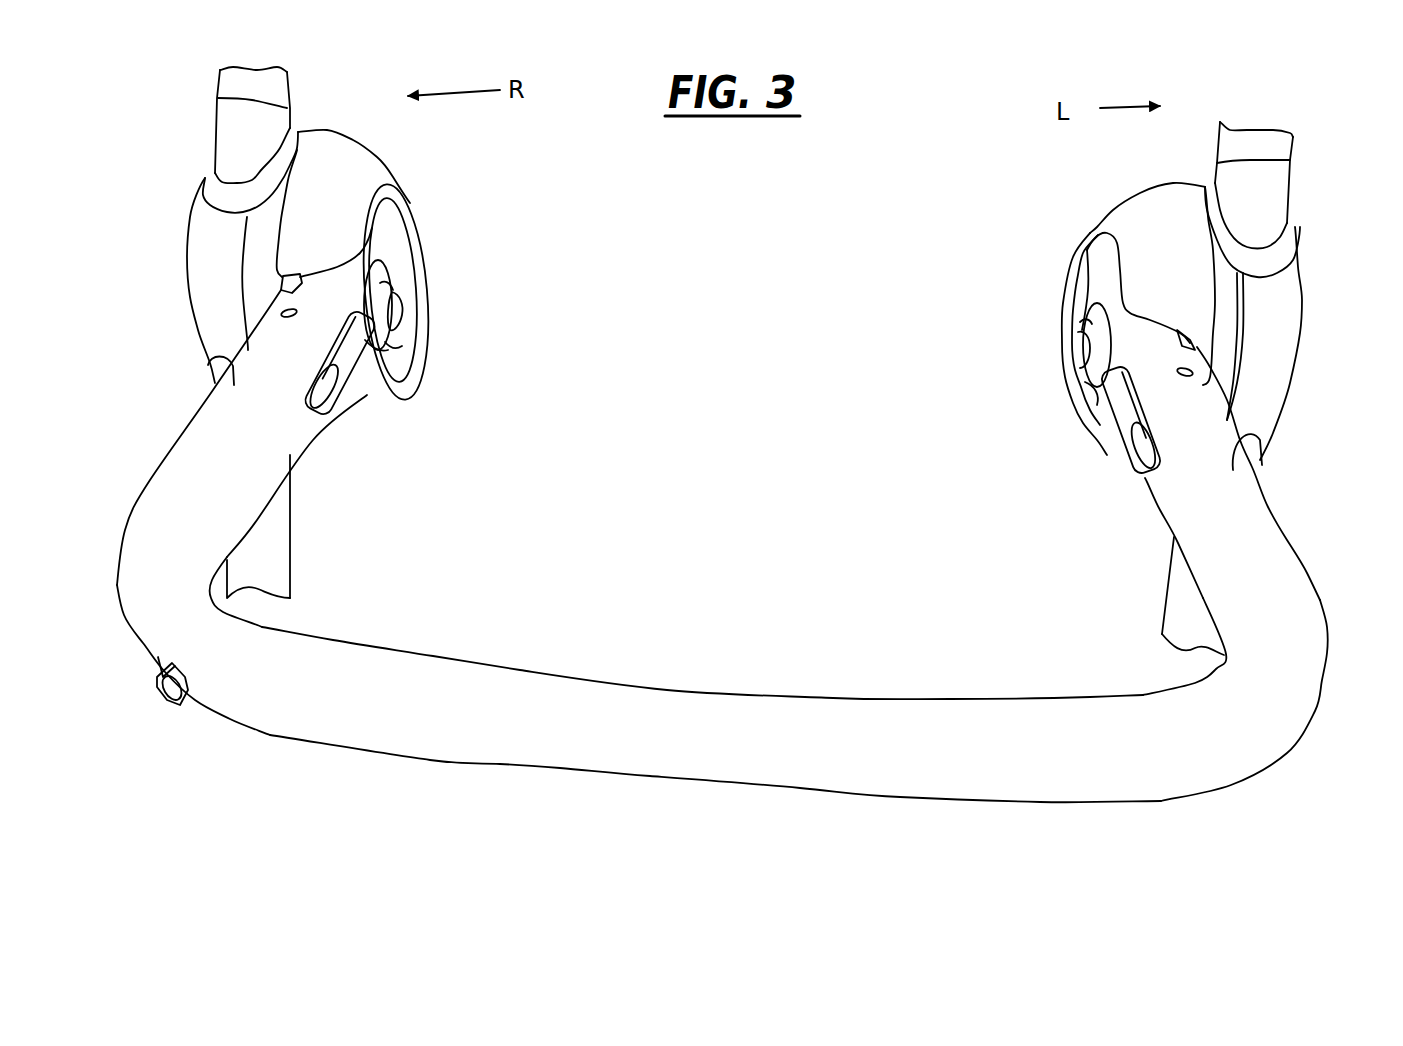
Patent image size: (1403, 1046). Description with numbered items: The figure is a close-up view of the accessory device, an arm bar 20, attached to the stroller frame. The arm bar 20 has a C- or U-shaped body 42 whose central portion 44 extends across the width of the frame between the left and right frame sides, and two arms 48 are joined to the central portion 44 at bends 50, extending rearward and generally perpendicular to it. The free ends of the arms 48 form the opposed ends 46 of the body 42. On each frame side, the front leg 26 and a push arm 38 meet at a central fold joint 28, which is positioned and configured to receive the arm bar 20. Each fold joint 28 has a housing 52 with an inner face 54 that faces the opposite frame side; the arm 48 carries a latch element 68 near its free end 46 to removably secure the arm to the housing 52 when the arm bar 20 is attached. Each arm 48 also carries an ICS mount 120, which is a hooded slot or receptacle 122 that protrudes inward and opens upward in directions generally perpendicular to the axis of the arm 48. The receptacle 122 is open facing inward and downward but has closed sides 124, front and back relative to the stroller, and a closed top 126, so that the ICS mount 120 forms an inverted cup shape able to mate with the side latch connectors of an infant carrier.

The arm bar 20 is at (729, 582).
The front leg 26 is at (282, 527).
The fold joint 28 is at (757, 272).
The push arm 38 is at (275, 78).
The body 42 is at (729, 576).
The central portion 44 is at (673, 727).
The end 46 is at (390, 250).
The arm 48 is at (282, 443).
The bend 50 is at (147, 622).
The housing 52 is at (347, 167).
The inner face 54 is at (390, 203).
The latch element 68 is at (353, 370).
The ICS mount 120 is at (393, 300).
The receptacle 122 is at (396, 318).
The closed sides 124 is at (393, 296).
The closed top 126 is at (397, 340).